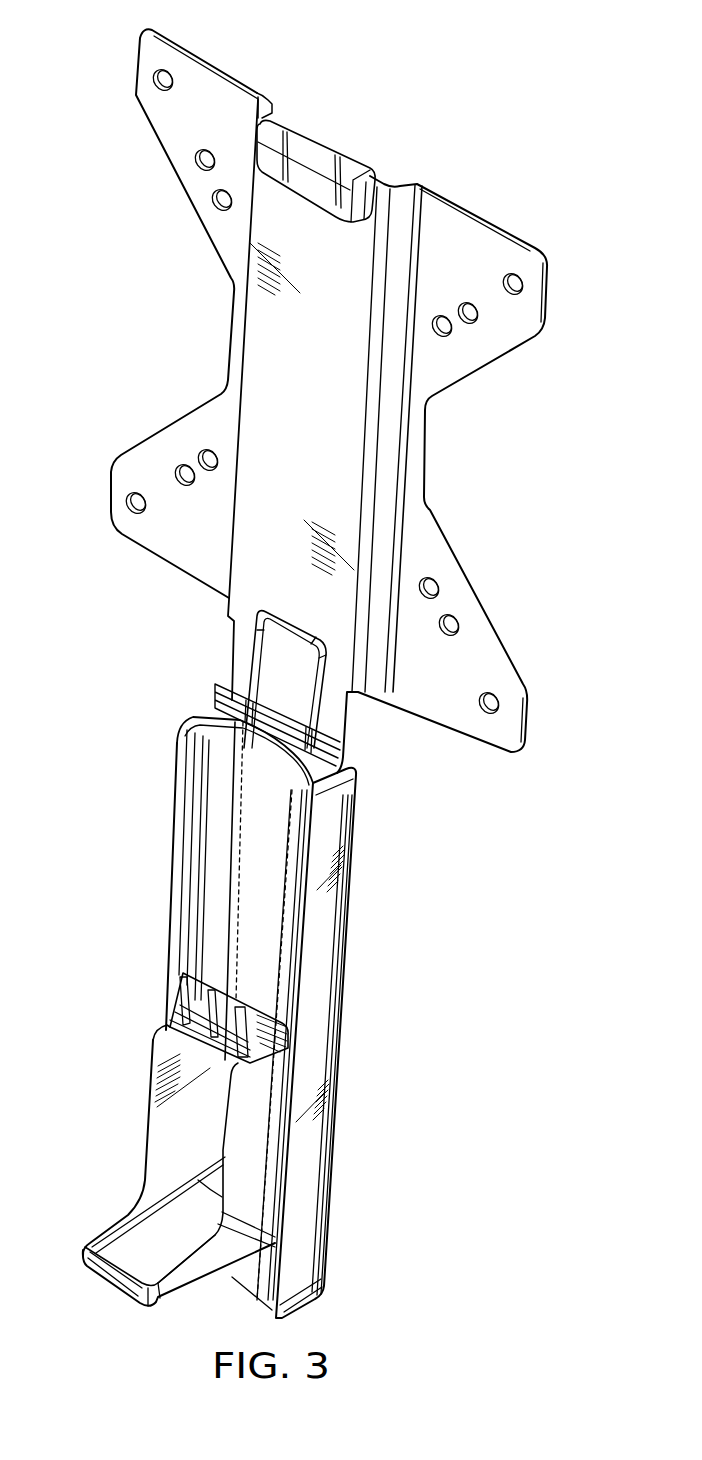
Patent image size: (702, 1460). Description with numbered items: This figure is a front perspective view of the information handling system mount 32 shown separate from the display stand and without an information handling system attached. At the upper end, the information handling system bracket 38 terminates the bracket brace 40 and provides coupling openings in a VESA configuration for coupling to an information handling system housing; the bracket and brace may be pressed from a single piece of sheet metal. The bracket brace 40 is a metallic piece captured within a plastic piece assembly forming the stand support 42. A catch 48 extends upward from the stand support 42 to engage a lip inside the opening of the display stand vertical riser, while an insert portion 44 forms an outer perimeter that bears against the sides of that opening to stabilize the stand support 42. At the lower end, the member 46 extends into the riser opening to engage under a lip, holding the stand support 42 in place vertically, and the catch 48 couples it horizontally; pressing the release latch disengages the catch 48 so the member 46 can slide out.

The information handling system mount 32 is at (452, 73).
The information handling system bracket 38 is at (486, 214).
The bracket brace 40 is at (231, 655).
The stand support 42 is at (334, 1117).
The insert portion 44 is at (151, 1130).
The member 46 is at (104, 1293).
The catch 48 is at (160, 1040).